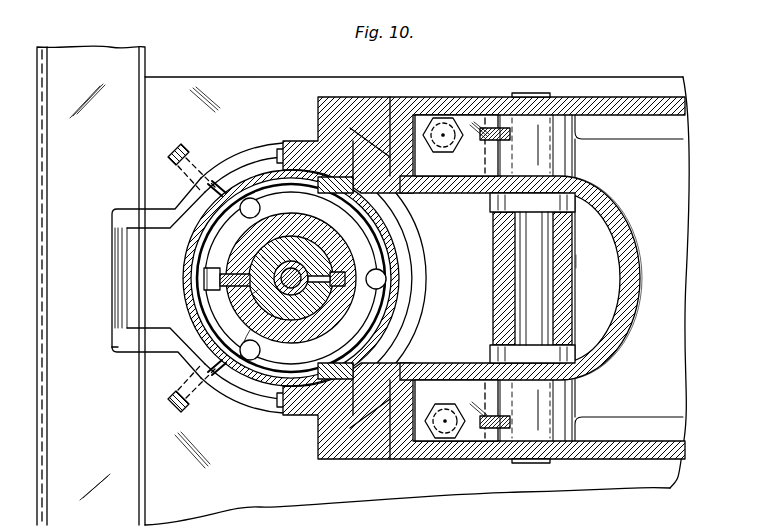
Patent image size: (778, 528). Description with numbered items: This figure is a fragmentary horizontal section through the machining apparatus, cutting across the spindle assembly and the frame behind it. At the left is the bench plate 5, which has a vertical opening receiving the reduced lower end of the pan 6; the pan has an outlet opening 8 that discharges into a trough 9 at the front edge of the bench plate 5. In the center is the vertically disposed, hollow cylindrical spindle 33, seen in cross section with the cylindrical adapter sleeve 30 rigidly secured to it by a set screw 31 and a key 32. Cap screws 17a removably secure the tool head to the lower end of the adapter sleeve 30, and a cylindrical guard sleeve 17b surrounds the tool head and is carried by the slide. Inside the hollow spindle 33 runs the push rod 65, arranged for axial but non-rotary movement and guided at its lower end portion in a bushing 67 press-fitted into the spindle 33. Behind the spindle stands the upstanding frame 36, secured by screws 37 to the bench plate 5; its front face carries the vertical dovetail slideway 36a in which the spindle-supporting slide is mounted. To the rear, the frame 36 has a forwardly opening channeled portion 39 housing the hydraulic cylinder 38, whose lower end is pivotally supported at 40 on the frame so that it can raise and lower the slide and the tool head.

The bench plate 5 is at (676, 88).
The pan 6 is at (408, 216).
The outlet opening 8 is at (116, 286).
The trough 9 is at (52, 462).
The cap screws 17a is at (250, 200).
The guard sleeve 17b is at (345, 292).
The adapter sleeve 30 is at (350, 248).
The set screw 31 is at (208, 274).
The key 32 is at (335, 286).
The spindle 33 is at (350, 322).
The frame 36 is at (403, 460).
The dovetail slideway 36a is at (358, 462).
The screws 37 is at (445, 118).
The hydraulic cylinder 38 is at (572, 293).
The channeled portion 39 is at (640, 306).
The pivotal support 40 is at (575, 262).
The push rod 65 is at (252, 294).
The bushing 67 is at (262, 257).